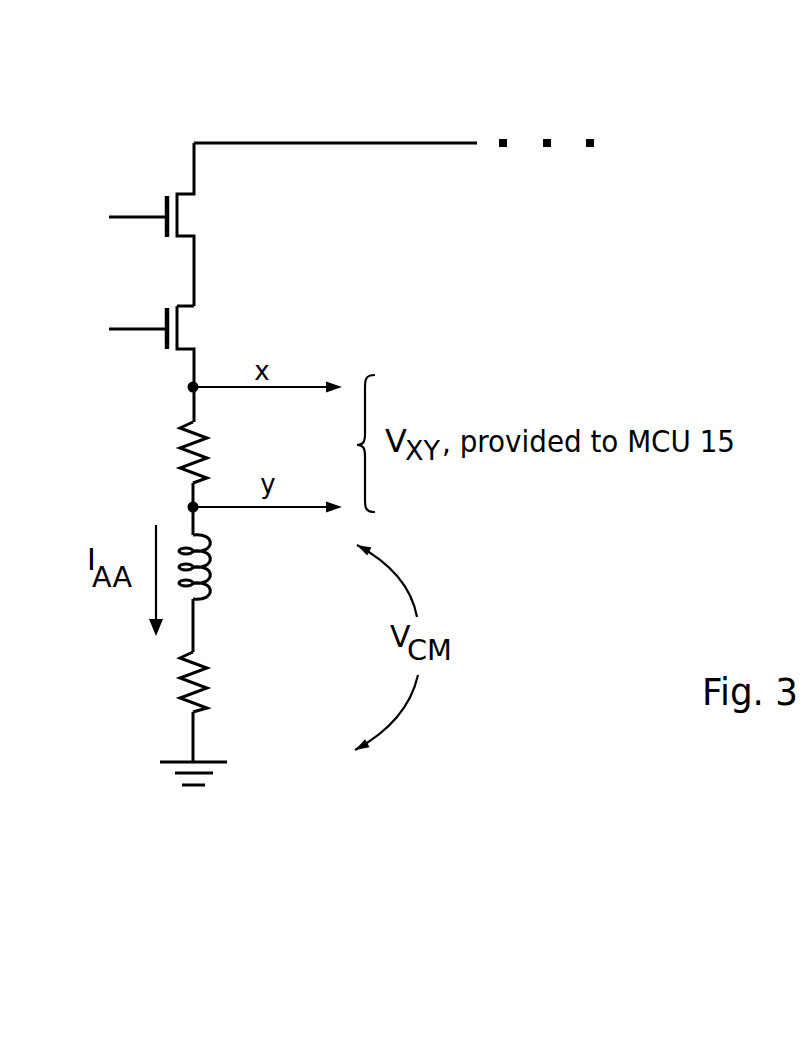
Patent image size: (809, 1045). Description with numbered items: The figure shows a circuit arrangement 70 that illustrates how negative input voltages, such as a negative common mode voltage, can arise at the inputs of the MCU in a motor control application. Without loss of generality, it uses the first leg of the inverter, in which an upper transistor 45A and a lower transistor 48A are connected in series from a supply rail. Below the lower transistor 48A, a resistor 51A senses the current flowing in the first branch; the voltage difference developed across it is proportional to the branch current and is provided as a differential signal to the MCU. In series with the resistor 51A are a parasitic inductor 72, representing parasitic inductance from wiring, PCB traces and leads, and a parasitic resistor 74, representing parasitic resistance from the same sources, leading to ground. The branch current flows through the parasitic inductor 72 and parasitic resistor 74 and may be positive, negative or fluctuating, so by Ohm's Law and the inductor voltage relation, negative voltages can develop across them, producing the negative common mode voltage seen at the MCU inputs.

The circuit arrangement 70 is at (538, 66).
The upper transistor 45A is at (184, 231).
The lower transistor 48A is at (182, 347).
The resistor 51A is at (179, 437).
The parasitic inductor 72 is at (208, 563).
The parasitic resistor 74 is at (200, 670).